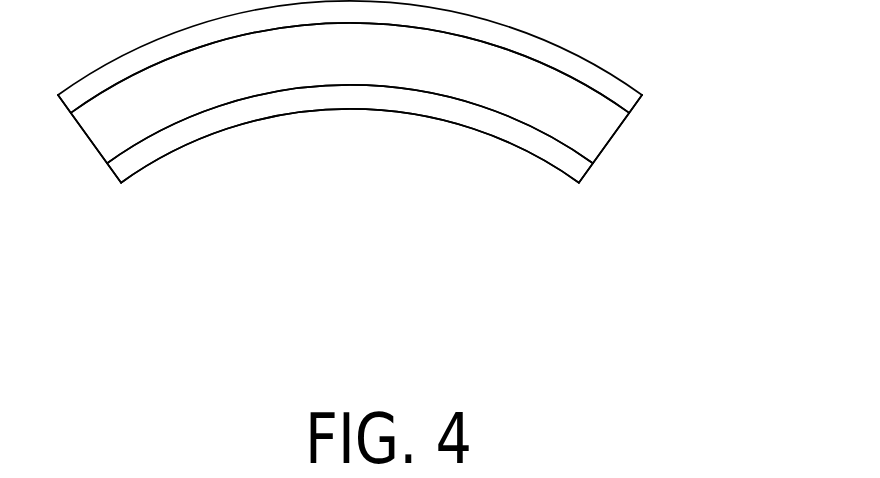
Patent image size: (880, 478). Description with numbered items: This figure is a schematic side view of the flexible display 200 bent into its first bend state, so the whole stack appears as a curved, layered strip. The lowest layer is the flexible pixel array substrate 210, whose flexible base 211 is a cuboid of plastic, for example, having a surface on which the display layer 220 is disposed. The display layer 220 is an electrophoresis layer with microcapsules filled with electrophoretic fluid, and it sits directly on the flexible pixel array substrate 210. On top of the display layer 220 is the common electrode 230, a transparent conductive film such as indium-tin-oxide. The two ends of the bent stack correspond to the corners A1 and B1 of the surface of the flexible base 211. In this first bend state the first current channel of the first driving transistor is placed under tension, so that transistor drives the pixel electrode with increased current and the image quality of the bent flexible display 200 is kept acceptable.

The flexible display 200 is at (727, 335).
The flexible pixel array substrate 210 is at (490, 150).
The flexible base 211 is at (271, 107).
The display layer 220 is at (622, 150).
The common electrode 230 is at (645, 108).
The corner A1 is at (107, 163).
The corner B1 is at (597, 168).